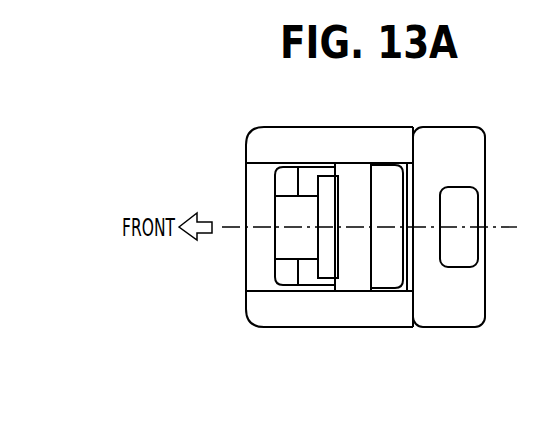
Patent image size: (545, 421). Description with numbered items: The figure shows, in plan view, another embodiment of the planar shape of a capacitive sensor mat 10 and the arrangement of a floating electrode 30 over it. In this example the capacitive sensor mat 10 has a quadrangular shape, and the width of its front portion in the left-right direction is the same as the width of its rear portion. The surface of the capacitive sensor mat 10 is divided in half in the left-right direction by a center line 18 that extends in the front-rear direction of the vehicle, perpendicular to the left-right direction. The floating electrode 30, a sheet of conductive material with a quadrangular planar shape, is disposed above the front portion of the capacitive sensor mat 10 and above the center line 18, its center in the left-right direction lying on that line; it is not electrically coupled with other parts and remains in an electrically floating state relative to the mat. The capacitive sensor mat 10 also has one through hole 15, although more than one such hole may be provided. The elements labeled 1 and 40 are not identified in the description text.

The connector 1 is at (388, 176).
The capacitive sensor mat 10 is at (385, 268).
The through hole 15 is at (327, 270).
The center line 18 is at (491, 226).
The floating electrode 30 is at (293, 246).
The cover 40 is at (464, 125).